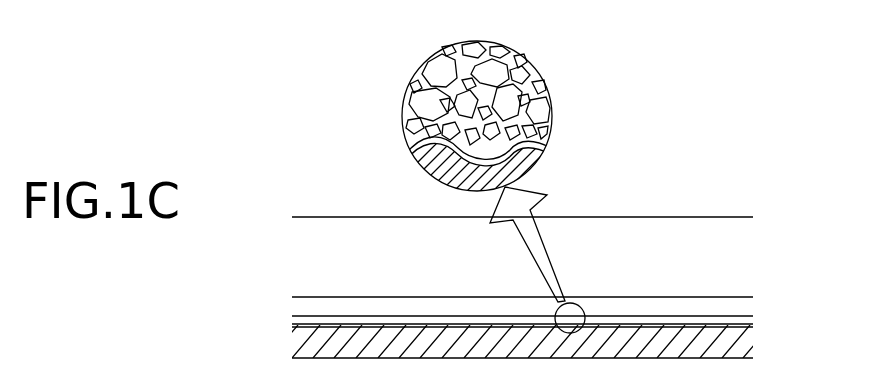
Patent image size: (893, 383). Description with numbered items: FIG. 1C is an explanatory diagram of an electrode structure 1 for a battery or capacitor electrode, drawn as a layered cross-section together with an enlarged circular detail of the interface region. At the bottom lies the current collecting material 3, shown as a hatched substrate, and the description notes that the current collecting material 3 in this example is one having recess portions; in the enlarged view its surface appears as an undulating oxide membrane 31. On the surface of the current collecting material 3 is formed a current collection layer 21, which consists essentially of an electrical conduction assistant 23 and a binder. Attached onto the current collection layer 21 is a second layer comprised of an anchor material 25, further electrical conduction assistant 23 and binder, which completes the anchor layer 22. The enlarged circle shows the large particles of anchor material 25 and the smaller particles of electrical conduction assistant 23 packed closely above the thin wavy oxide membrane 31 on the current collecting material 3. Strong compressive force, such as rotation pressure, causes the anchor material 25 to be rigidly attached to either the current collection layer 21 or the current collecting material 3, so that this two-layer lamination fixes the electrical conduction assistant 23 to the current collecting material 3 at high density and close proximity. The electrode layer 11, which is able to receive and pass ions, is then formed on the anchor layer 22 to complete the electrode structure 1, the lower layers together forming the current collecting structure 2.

The electrode structure 1 is at (782, 217).
The current collecting structure 2 is at (760, 297).
The current collecting material 3 is at (433, 173).
The electrode layer 11 is at (283, 217).
The current collection layer 21 is at (278, 324).
The anchor layer 22 is at (278, 317).
The electrical conduction assistant 23 is at (548, 133).
The anchor material 25 is at (438, 65).
The oxide membrane 31 is at (552, 153).